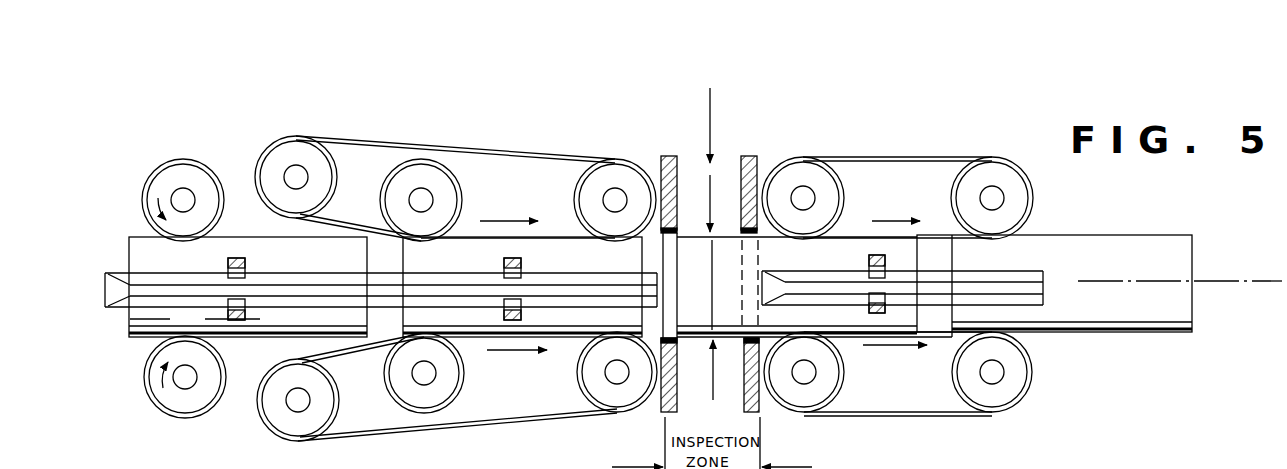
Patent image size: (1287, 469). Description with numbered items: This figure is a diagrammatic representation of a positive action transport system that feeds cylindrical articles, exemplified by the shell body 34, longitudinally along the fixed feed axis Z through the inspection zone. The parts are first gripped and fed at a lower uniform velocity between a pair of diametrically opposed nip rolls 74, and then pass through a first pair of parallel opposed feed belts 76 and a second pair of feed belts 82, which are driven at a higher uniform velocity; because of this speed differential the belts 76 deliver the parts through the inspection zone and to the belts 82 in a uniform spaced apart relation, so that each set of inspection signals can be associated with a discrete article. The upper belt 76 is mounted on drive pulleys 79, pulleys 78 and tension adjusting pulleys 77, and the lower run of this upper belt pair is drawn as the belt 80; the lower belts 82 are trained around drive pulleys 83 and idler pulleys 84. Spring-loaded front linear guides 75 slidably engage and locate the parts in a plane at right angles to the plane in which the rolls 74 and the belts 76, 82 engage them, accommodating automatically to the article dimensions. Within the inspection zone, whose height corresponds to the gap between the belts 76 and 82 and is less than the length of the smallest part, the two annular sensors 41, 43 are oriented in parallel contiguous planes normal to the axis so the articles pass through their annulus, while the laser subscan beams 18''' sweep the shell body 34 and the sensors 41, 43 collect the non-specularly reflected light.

The shell body 34 is at (238, 237).
The front linear guides 75 is at (556, 273).
The feed axis Z is at (1258, 281).
The nip rolls 74 is at (190, 162).
The tension adjusting pulleys 77 is at (295, 173).
The first pair of feed belts 76 is at (356, 140).
The drive pulleys 79 is at (424, 196).
The pulleys 78 is at (608, 168).
The lower conveyor belt 80 is at (350, 436).
The annular sensor 43 is at (665, 156).
The annular sensor 41 is at (752, 156).
The subscan beams 18''' is at (723, 223).
The drive pulleys 83 is at (804, 194).
The second pair of feed belts 82 is at (902, 156).
The idler pulleys 84 is at (994, 194).